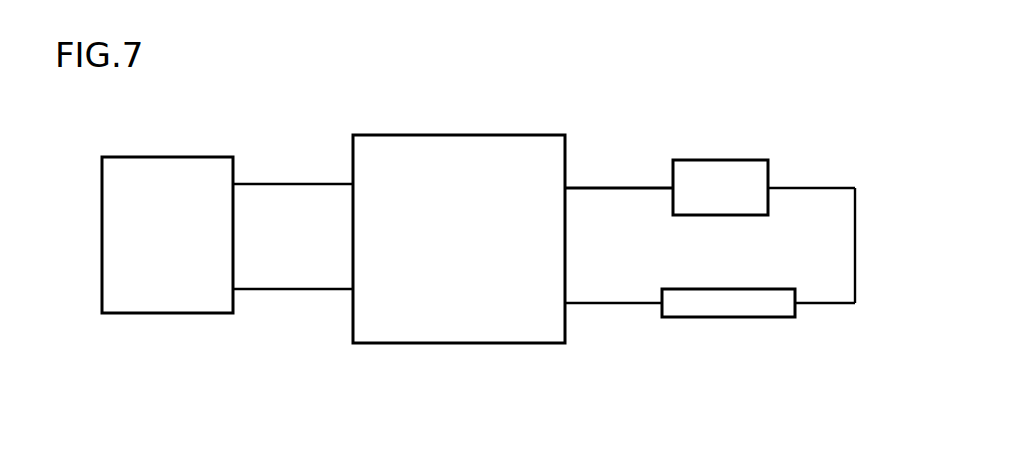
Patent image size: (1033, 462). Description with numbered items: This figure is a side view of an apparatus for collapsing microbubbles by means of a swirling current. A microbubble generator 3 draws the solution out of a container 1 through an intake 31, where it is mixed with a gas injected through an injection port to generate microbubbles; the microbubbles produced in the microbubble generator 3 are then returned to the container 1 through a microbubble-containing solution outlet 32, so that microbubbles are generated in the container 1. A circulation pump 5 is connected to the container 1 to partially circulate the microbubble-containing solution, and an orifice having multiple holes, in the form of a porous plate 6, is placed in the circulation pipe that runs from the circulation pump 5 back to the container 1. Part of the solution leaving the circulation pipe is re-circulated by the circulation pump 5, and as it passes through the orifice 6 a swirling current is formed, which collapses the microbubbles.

The container 1 is at (459, 218).
The microbubble generator 3 is at (167, 215).
The intake 31 is at (293, 171).
The microbubble-containing solution outlet 32 is at (293, 306).
The circulation pump 5 is at (720, 172).
The orifice (porous plate) 6 is at (728, 289).